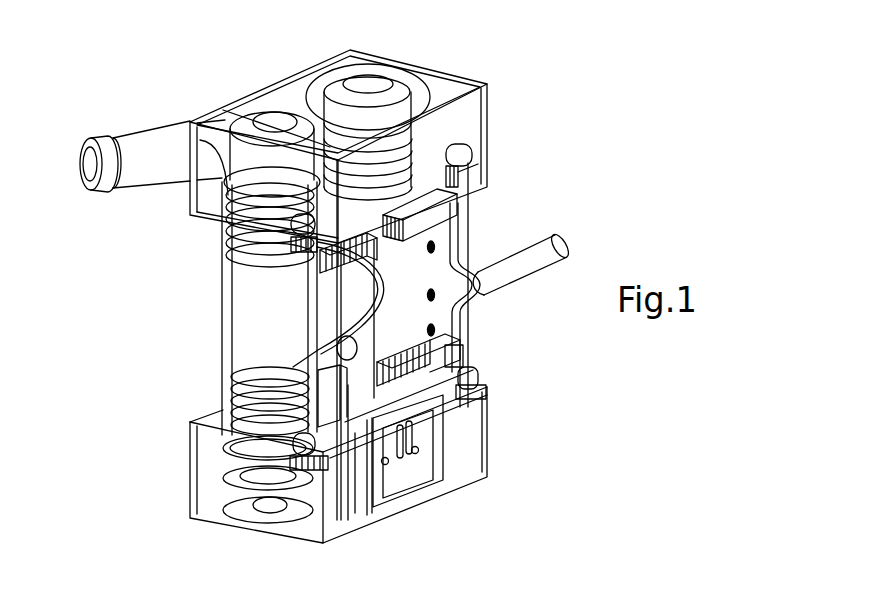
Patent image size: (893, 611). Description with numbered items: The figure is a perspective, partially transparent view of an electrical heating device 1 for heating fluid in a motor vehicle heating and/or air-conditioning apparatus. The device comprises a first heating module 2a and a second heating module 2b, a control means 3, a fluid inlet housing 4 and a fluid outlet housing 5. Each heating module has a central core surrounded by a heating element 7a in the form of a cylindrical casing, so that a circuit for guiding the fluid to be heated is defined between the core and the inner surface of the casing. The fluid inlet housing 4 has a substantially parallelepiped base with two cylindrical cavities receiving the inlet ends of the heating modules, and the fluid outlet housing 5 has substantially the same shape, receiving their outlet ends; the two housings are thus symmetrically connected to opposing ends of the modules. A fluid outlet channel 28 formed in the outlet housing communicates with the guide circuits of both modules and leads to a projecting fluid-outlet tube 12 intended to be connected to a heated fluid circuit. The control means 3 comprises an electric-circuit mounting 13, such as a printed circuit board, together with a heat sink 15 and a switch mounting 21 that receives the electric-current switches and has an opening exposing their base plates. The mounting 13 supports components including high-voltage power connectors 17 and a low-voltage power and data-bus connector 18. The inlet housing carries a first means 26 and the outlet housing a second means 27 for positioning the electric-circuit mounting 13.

The electrical heating device 1 is at (521, 68).
The first heating module 2a is at (198, 357).
The second heating module 2b is at (616, 602).
The control means 3 is at (505, 221).
The fluid inlet housing 4 is at (492, 456).
The fluid outlet housing 5 is at (438, 72).
The heating element 7a is at (221, 312).
The fluid-outlet tube 12 is at (84, 160).
The electric-circuit mounting 13 is at (413, 314).
The heat sink 15 is at (348, 505).
The high-voltage power connectors 17 is at (478, 207).
The low-voltage power connector and data-bus connector 18 is at (313, 295).
The switch mounting 21 is at (440, 442).
The first means for positioning 26 is at (480, 381).
The second means for positioning 27 is at (290, 226).
The fluid outlet channel 28 is at (147, 153).